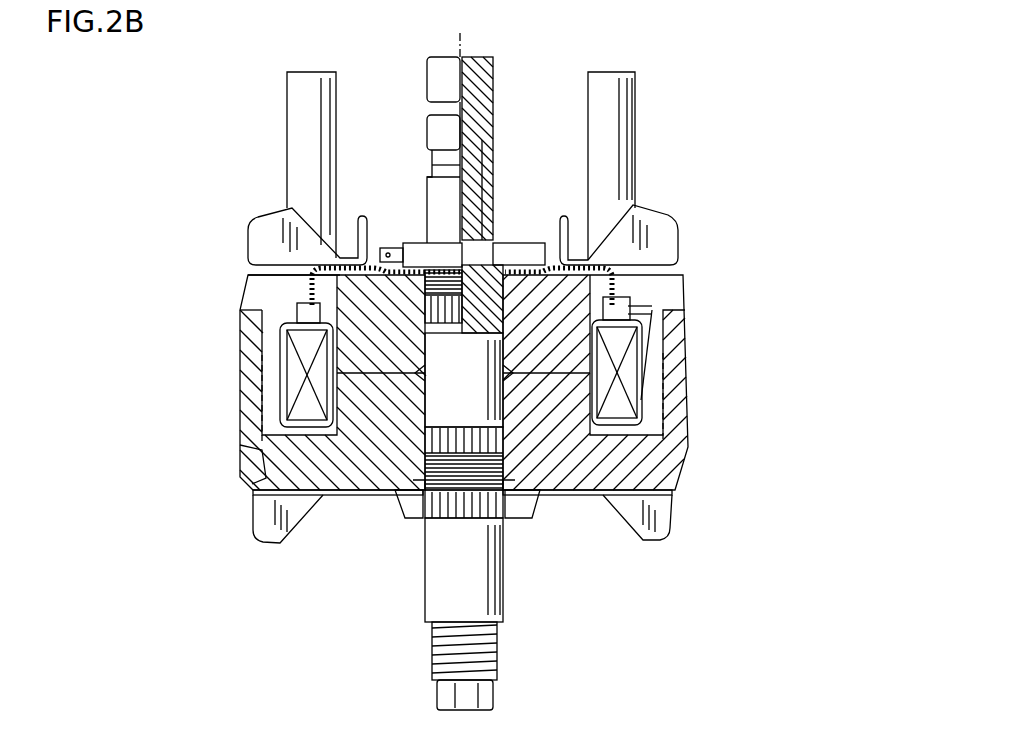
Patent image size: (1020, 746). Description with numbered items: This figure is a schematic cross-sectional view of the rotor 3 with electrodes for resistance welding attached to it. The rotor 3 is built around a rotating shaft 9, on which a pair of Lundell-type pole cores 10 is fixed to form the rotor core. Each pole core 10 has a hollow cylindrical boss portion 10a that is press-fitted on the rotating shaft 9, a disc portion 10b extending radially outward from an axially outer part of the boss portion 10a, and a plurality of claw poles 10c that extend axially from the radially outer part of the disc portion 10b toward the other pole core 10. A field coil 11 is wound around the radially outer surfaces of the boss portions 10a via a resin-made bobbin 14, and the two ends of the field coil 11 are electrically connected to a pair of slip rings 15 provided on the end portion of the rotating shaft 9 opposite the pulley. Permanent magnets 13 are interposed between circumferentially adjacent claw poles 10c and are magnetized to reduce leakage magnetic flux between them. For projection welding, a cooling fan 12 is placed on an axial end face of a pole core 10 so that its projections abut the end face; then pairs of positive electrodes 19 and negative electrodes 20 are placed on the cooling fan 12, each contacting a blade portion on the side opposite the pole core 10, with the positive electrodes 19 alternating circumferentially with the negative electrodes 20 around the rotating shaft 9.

The rotor 3 is at (700, 195).
The rotating shaft 9 is at (443, 585).
The Lundell-type pole core 10 is at (698, 282).
The boss portion 10a is at (573, 338).
The disc portion 10b is at (573, 482).
The claw pole 10c is at (648, 413).
The field coil 11 is at (297, 382).
The cooling fan 12 is at (270, 230).
The permanent magnet 13 is at (680, 371).
The resin-made bobbin 14 is at (285, 368).
The slip ring 15 is at (440, 85).
The positive electrode 19 is at (300, 97).
The negative electrode 20 is at (620, 93).